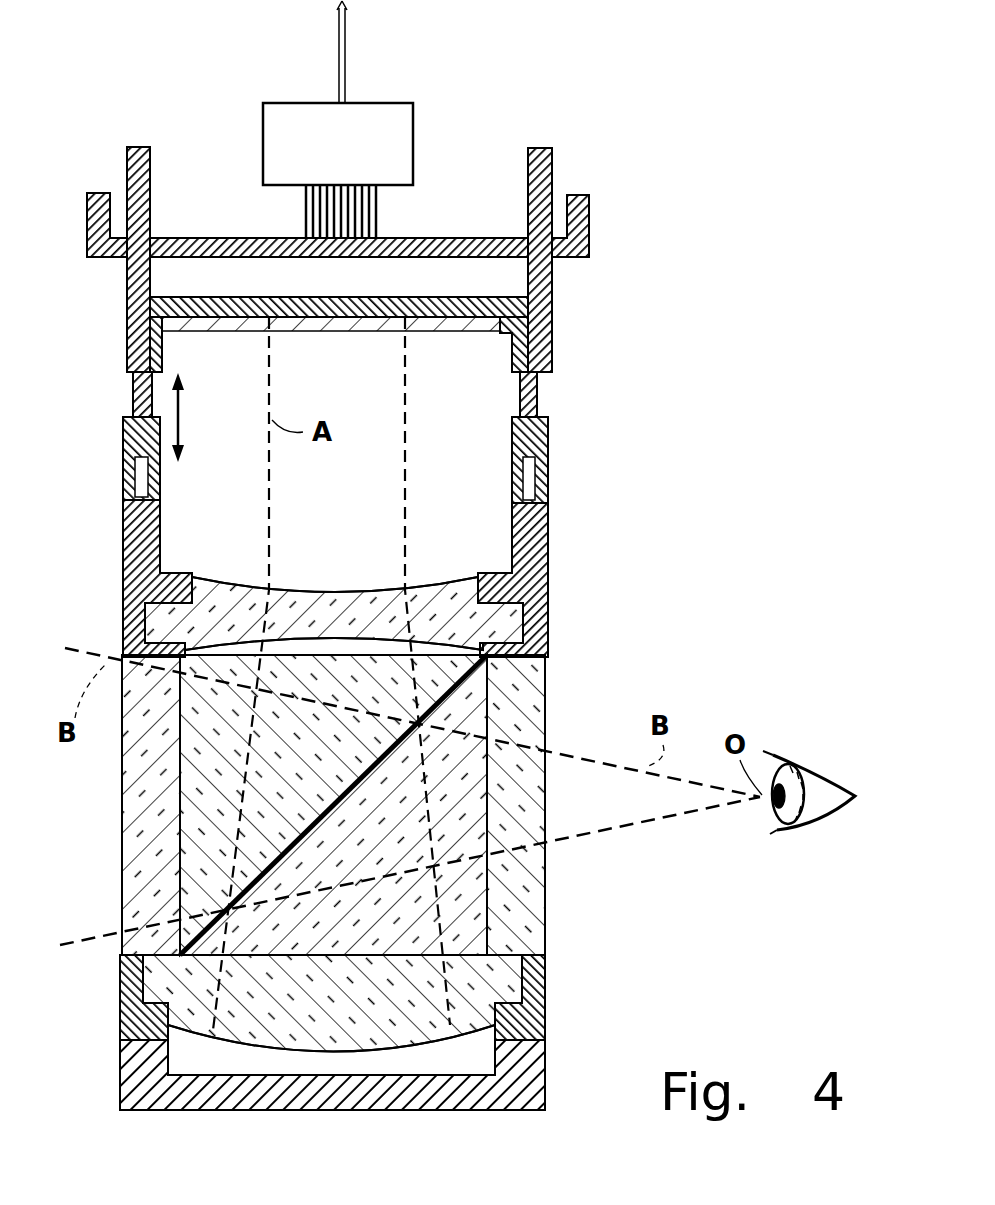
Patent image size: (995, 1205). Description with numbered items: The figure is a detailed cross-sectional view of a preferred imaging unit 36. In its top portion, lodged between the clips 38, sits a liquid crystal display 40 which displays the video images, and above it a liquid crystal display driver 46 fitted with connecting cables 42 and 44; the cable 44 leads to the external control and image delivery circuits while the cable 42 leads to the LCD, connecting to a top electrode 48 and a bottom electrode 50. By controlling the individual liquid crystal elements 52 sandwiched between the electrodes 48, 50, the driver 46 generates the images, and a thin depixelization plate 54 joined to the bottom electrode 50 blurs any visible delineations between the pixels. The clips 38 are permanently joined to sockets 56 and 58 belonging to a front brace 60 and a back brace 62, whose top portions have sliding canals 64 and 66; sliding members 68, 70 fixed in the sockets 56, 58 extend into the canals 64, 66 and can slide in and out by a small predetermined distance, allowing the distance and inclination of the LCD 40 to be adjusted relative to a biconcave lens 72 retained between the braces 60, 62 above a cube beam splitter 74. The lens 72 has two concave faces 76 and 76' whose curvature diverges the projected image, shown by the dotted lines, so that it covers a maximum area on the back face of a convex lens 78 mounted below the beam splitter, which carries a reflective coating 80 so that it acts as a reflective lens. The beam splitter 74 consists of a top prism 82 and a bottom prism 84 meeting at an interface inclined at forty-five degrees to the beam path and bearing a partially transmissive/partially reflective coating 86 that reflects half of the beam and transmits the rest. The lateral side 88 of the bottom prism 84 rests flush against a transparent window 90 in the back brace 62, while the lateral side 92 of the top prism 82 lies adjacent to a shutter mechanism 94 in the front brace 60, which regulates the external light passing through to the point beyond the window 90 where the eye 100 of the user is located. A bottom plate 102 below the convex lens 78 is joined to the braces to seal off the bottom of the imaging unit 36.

The imaging unit 36 is at (697, 268).
The clips 38 is at (127, 165).
The liquid crystal display 40 is at (463, 222).
The connecting cable 42 is at (337, 28).
The connecting cable 44 is at (378, 212).
The liquid crystal display driver 46 is at (395, 103).
The top electrode 48 is at (183, 238).
The bottom electrode 50 is at (190, 297).
The liquid crystal elements 52 is at (238, 272).
The depixelization plate 54 is at (470, 328).
The socket 56 is at (127, 340).
The socket 58 is at (552, 345).
The front brace 60 is at (123, 592).
The back brace 62 is at (548, 545).
The sliding canal 64 is at (136, 472).
The sliding canal 66 is at (535, 495).
The sliding member 68 is at (133, 385).
The sliding member 70 is at (540, 397).
The biconcave lens 72 is at (222, 605).
The cube beam splitter 74 is at (177, 808).
The concave face 76 is at (335, 561).
The concave face 76' is at (402, 660).
The convex lens 78 is at (428, 1022).
The reflective coating 80 is at (297, 1055).
The top prism 82 is at (205, 770).
The bottom prism 84 is at (543, 936).
The partially transmissive/partially reflective coating 86 is at (345, 805).
The lateral side 88 is at (490, 731).
The window 90 is at (545, 690).
The lateral side 92 is at (160, 888).
The shutter mechanism 94 is at (140, 860).
The eye 100 is at (822, 822).
The bottom plate 102 is at (400, 1110).